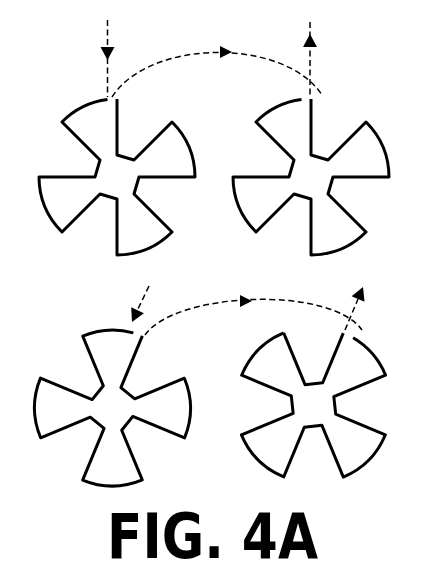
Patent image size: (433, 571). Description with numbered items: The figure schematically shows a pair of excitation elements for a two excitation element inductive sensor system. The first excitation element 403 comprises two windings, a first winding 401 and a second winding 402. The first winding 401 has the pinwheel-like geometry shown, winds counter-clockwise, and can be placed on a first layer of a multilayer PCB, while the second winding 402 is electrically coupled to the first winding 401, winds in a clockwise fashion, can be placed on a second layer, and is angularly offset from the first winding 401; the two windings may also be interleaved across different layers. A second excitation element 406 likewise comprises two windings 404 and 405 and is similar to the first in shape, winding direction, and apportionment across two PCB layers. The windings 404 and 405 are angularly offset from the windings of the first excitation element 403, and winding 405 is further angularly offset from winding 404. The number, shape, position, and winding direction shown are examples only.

The first winding 401 is at (72, 110).
The second winding 402 is at (348, 110).
The first excitation element 403 is at (246, 98).
The winding 404 is at (66, 387).
The winding 405 is at (394, 334).
The second excitation element 406 is at (253, 316).